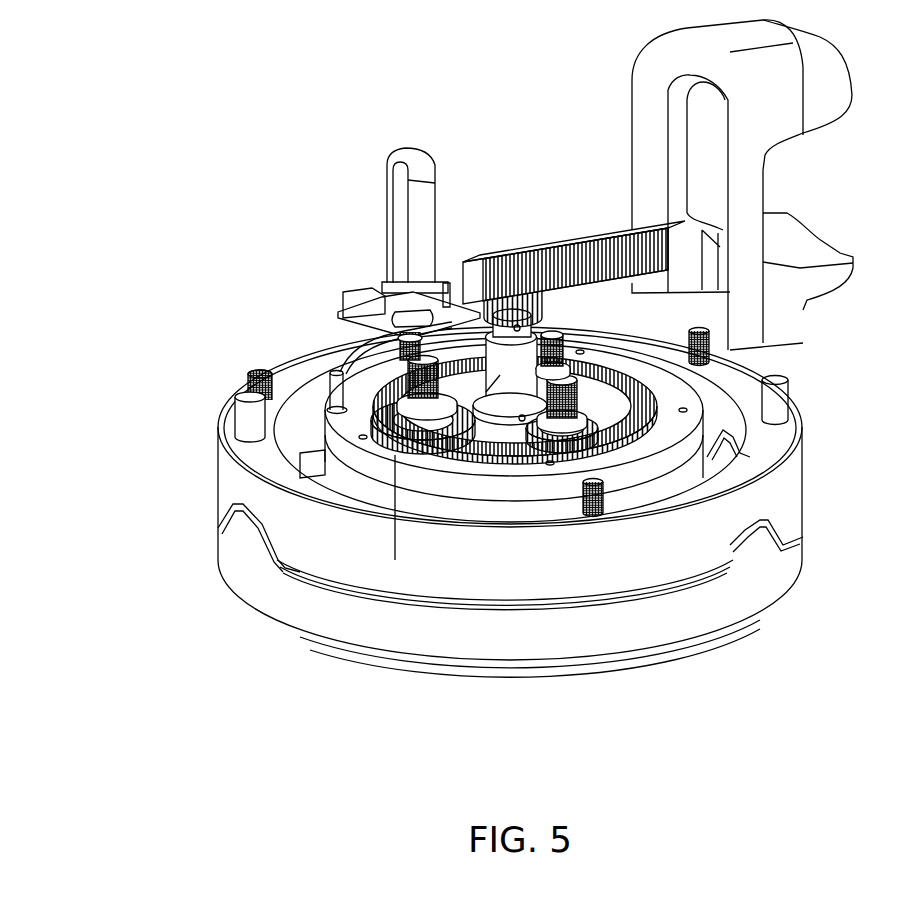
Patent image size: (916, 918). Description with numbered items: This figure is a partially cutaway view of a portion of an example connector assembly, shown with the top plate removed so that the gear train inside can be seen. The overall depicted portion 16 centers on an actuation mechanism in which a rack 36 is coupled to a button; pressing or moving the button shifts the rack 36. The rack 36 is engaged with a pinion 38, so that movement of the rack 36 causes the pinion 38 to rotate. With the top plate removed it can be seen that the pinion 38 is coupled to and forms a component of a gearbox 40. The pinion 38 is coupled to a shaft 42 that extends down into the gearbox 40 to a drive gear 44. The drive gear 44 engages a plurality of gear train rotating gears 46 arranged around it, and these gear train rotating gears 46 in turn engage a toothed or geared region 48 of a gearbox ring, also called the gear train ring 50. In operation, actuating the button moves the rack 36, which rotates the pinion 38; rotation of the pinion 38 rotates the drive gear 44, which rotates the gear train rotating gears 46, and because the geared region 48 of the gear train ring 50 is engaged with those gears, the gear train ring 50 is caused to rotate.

The drive mechanism assembly 16 is at (243, 138).
The rack 36 is at (587, 257).
The pinion 38 is at (497, 268).
The gearbox 40 is at (372, 426).
The shaft 42 is at (450, 460).
The drive gear 44 is at (500, 462).
The gear train rotating gears 46 is at (262, 522).
The geared region 48 is at (650, 392).
The gear train ring 50 is at (427, 450).